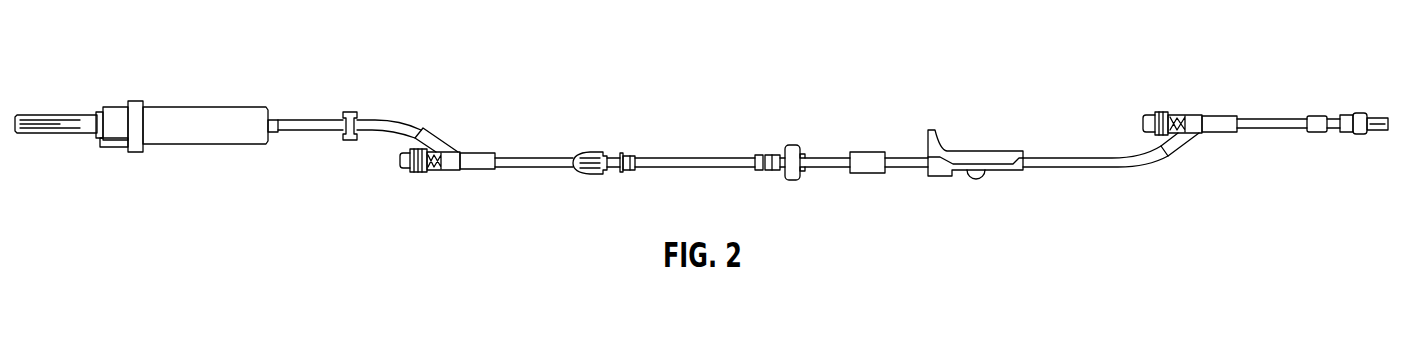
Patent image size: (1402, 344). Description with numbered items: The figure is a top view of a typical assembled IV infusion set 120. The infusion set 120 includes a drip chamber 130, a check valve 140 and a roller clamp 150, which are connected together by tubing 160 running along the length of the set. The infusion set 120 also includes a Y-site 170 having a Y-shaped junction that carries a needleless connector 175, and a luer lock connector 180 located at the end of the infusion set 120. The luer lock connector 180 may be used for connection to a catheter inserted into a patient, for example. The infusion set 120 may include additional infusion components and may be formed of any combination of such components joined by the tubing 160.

The infusion set 120 is at (1166, 89).
The drip chamber 130 is at (207, 105).
The check valve 140 is at (793, 145).
The roller clamp 150 is at (978, 150).
The tubing 160 is at (673, 157).
The Y-site 170 is at (445, 143).
The needleless connector 175 is at (400, 162).
The luer lock connector 180 is at (1362, 133).